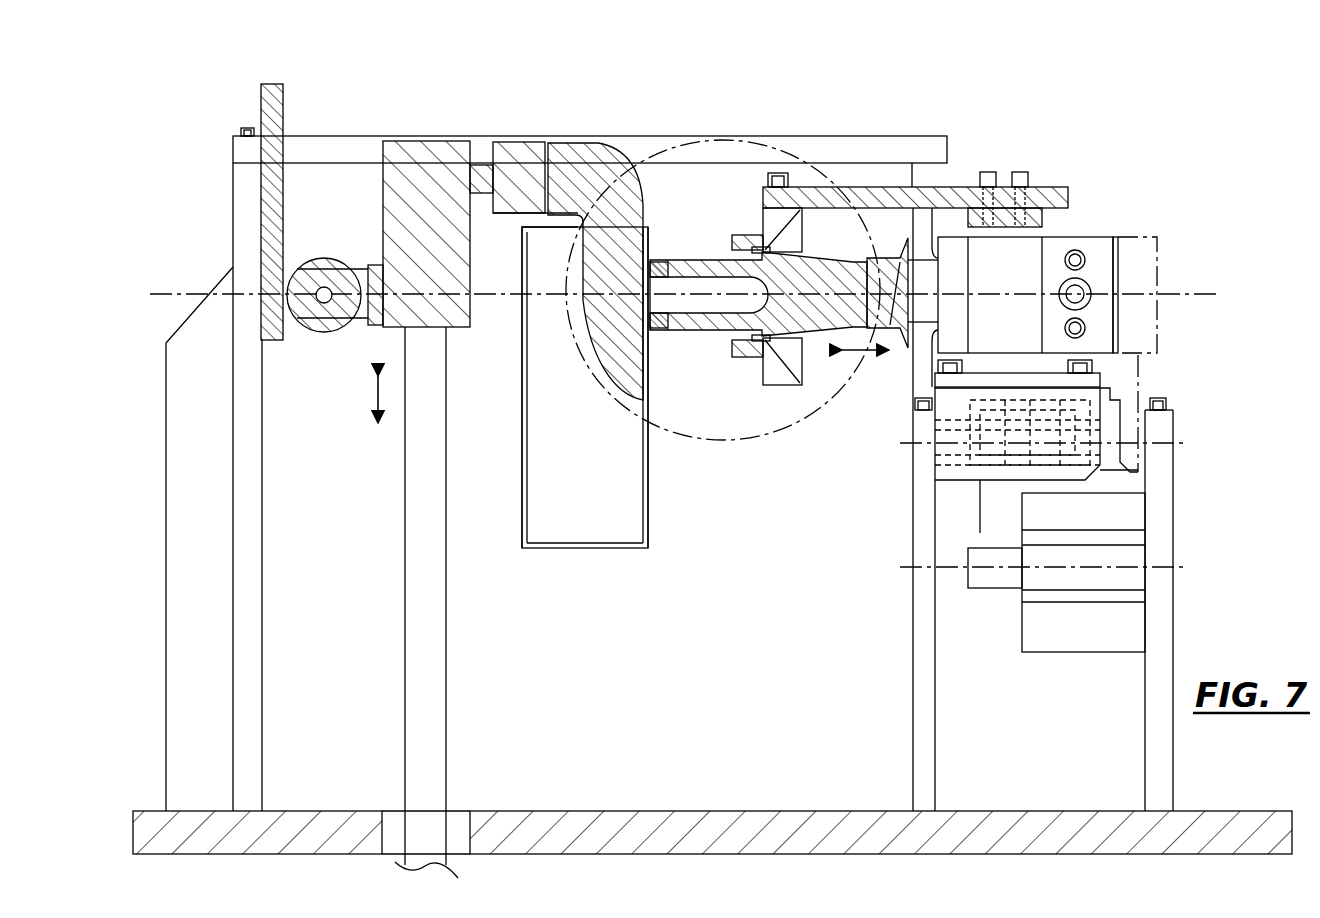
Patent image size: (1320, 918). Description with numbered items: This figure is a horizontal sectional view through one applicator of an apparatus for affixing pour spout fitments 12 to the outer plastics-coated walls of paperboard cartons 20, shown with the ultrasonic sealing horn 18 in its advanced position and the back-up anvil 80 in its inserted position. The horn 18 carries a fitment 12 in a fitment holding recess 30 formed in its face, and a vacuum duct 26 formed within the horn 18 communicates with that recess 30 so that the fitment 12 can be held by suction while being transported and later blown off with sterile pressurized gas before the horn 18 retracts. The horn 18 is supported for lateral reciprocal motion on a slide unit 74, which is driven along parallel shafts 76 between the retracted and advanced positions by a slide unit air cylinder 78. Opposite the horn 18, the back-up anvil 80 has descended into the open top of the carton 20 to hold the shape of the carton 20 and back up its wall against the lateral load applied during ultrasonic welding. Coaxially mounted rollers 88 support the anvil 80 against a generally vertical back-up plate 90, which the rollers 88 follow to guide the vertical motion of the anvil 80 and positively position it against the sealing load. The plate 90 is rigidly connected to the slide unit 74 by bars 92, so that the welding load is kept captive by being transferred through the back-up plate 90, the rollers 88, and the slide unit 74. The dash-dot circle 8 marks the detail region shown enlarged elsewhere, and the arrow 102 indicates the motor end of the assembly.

The detail section circle 8 is at (723, 317).
The pour spout fitment 12 is at (680, 308).
The ultrasonic sealing horn 18 is at (688, 258).
The paperboard carton 20 is at (607, 549).
The vacuum duct 26 is at (736, 250).
The fitment holding recess 30 is at (712, 303).
The slide unit 74 is at (1090, 440).
The parallel shaft 76 is at (1130, 452).
The slide unit air cylinder 78 is at (1115, 560).
The back-up anvil 80 is at (622, 350).
The roller 88 is at (318, 322).
The back-up plate 90 is at (273, 112).
The bar 92 is at (333, 147).
The motor 102 is at (1160, 204).